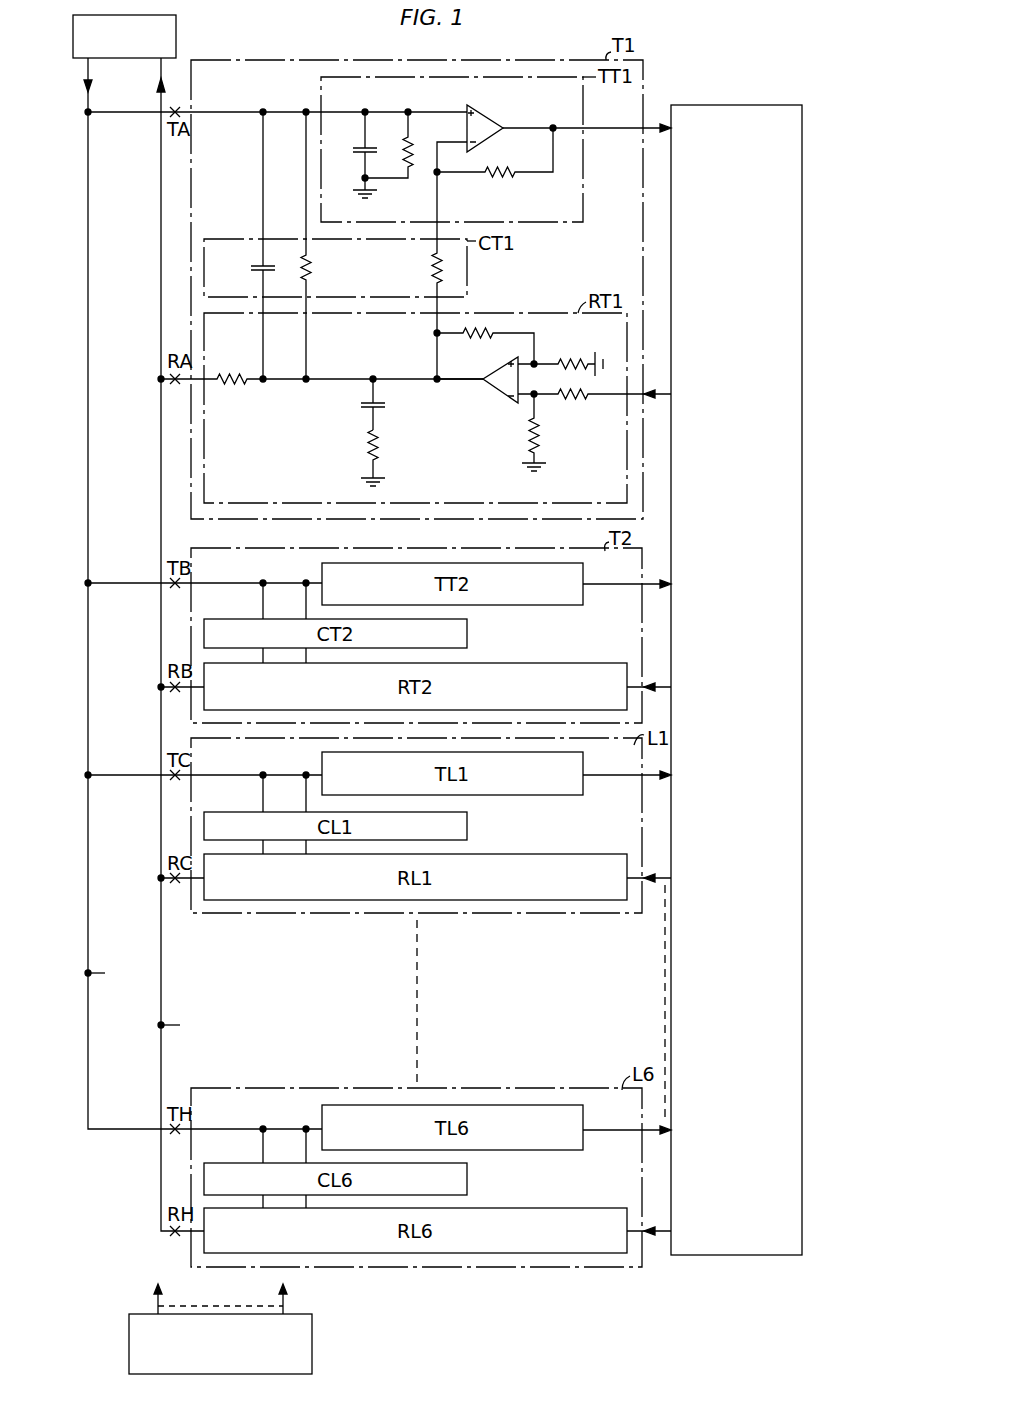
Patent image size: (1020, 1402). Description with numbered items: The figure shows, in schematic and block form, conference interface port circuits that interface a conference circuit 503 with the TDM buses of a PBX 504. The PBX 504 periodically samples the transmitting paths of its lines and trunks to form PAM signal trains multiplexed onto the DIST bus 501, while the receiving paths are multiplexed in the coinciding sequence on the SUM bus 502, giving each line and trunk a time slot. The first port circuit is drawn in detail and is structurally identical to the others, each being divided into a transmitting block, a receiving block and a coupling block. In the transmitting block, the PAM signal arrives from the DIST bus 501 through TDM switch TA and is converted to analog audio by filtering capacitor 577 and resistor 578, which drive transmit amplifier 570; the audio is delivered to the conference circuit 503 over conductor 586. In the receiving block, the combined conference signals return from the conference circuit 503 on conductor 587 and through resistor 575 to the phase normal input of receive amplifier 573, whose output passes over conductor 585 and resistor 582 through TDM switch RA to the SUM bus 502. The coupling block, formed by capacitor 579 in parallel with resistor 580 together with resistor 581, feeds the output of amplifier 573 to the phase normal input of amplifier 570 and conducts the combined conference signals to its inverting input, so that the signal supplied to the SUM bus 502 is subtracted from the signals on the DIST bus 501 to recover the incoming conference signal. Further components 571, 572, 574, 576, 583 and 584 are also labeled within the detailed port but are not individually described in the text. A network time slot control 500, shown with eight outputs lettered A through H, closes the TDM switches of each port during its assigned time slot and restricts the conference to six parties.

The network time slot control 500 is at (312, 1336).
The DIST bus 501 is at (88, 235).
The SUM bus 502 is at (161, 321).
The conference circuit 503 is at (742, 105).
The PBX 504 is at (124, 35).
The transmit amplifier 570 is at (489, 110).
The feedback resistor 571 is at (496, 165).
The feedback resistor 572 is at (478, 339).
The receive amplifier 573 is at (500, 398).
The bias resistor 574 is at (566, 360).
The resistor 575 is at (565, 404).
The resistor 576 is at (525, 443).
The capacitor 577 is at (393, 140).
The resistor 578 is at (412, 149).
The capacitor 579 is at (250, 268).
The resistor 580 is at (314, 266).
The resistor 581 is at (430, 268).
The resistor 582 is at (233, 384).
The capacitor 583 is at (360, 405).
The resistor 584 is at (362, 443).
The conductor 585 is at (420, 381).
The conductor 586 is at (562, 122).
The conductor 587 is at (605, 396).